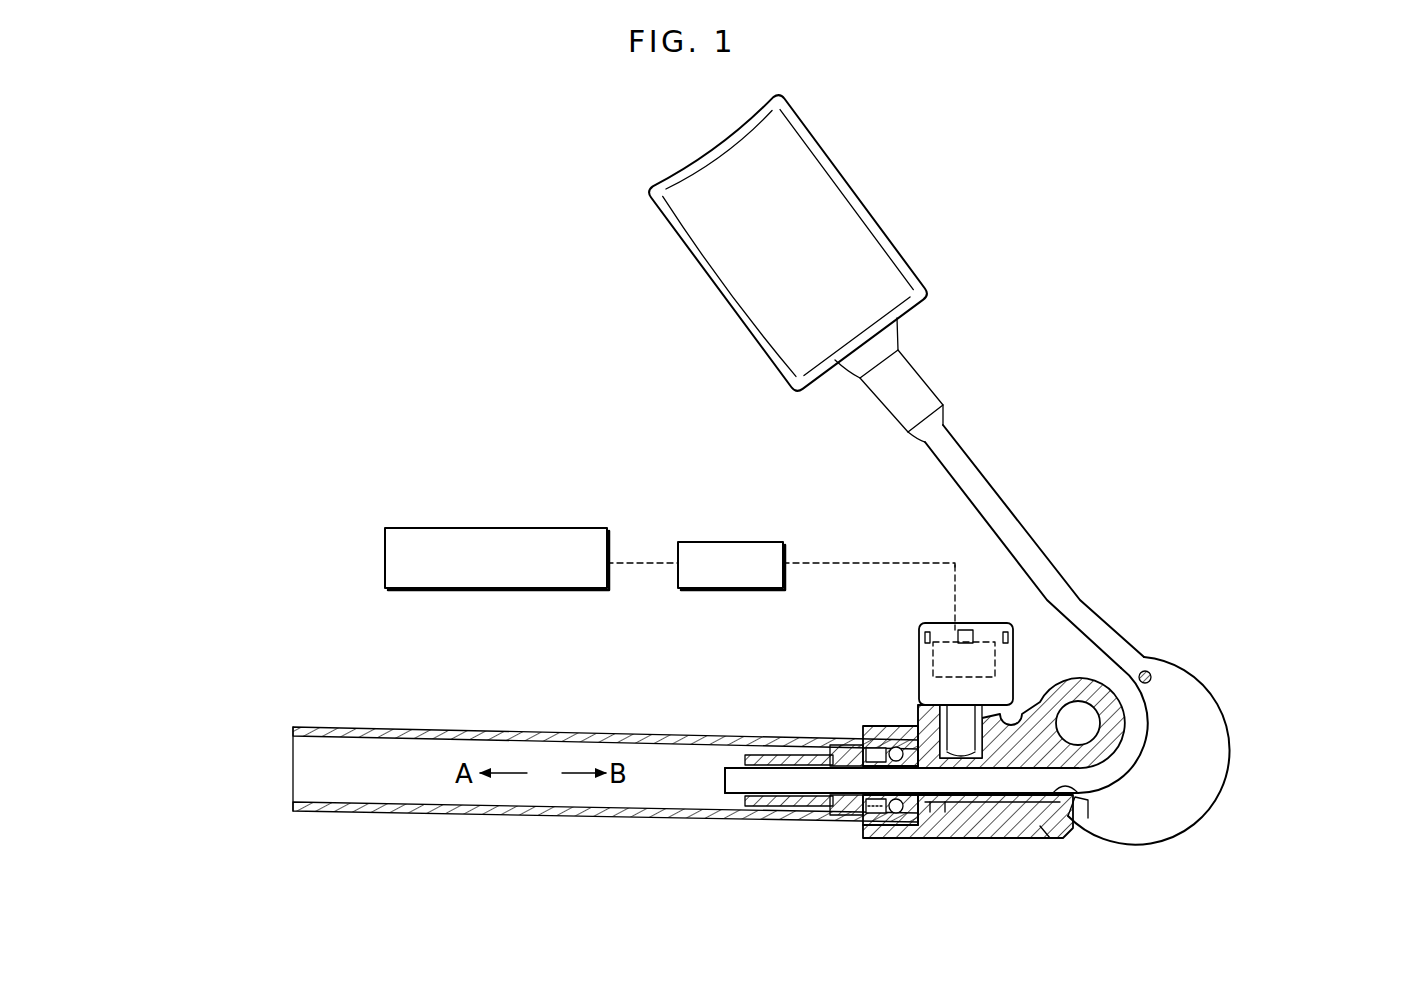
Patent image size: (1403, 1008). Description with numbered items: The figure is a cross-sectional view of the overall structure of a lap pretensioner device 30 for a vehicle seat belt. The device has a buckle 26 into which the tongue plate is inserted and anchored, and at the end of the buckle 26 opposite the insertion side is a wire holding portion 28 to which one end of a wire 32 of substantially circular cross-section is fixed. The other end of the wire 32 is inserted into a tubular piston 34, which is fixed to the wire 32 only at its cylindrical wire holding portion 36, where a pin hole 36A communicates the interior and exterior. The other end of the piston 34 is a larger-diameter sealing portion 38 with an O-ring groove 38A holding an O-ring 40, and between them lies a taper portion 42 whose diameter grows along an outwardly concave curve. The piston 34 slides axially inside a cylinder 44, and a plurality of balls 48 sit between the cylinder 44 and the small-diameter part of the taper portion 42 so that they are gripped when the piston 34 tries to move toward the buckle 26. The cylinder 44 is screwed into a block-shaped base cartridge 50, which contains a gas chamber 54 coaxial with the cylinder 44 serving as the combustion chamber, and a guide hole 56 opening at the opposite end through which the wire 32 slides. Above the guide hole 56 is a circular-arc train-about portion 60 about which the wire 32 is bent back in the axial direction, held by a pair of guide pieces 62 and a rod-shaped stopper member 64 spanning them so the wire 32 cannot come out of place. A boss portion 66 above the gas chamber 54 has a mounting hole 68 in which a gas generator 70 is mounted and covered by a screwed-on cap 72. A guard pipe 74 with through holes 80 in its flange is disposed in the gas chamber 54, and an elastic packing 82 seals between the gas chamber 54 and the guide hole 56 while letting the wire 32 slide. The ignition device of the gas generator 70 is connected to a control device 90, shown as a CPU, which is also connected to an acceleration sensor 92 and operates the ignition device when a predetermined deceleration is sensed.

The buckle 26 is at (878, 272).
The wire holding portion 28 is at (918, 392).
The lap pretensioner device 30 is at (1158, 490).
The wire 32 is at (1010, 520).
The piston 34 is at (878, 745).
The wire holding portion 36 is at (748, 808).
The pin hole 36A is at (835, 742).
The sealing portion 38 is at (907, 812).
The O-ring groove 38A is at (905, 742).
The O-ring 40 is at (895, 814).
The taper portion 42 is at (850, 805).
The cylinder 44 is at (553, 812).
The balls 48 is at (873, 820).
The base cartridge 50 is at (1037, 833).
The gas chamber 54 is at (967, 806).
The guide hole 56 is at (1088, 818).
The train-about portion 60 is at (1108, 745).
The guide pieces 62 is at (1170, 742).
The stopper member 64 is at (1150, 672).
The boss portion 66 is at (1003, 727).
The mounting hole 68 is at (935, 705).
The gas generator 70 is at (990, 695).
The cap 72 is at (980, 625).
The guard pipe 74 is at (950, 808).
The through holes 80 is at (933, 808).
The packing 82 is at (1037, 840).
The control device 90 is at (737, 541).
The acceleration sensor 92 is at (600, 508).